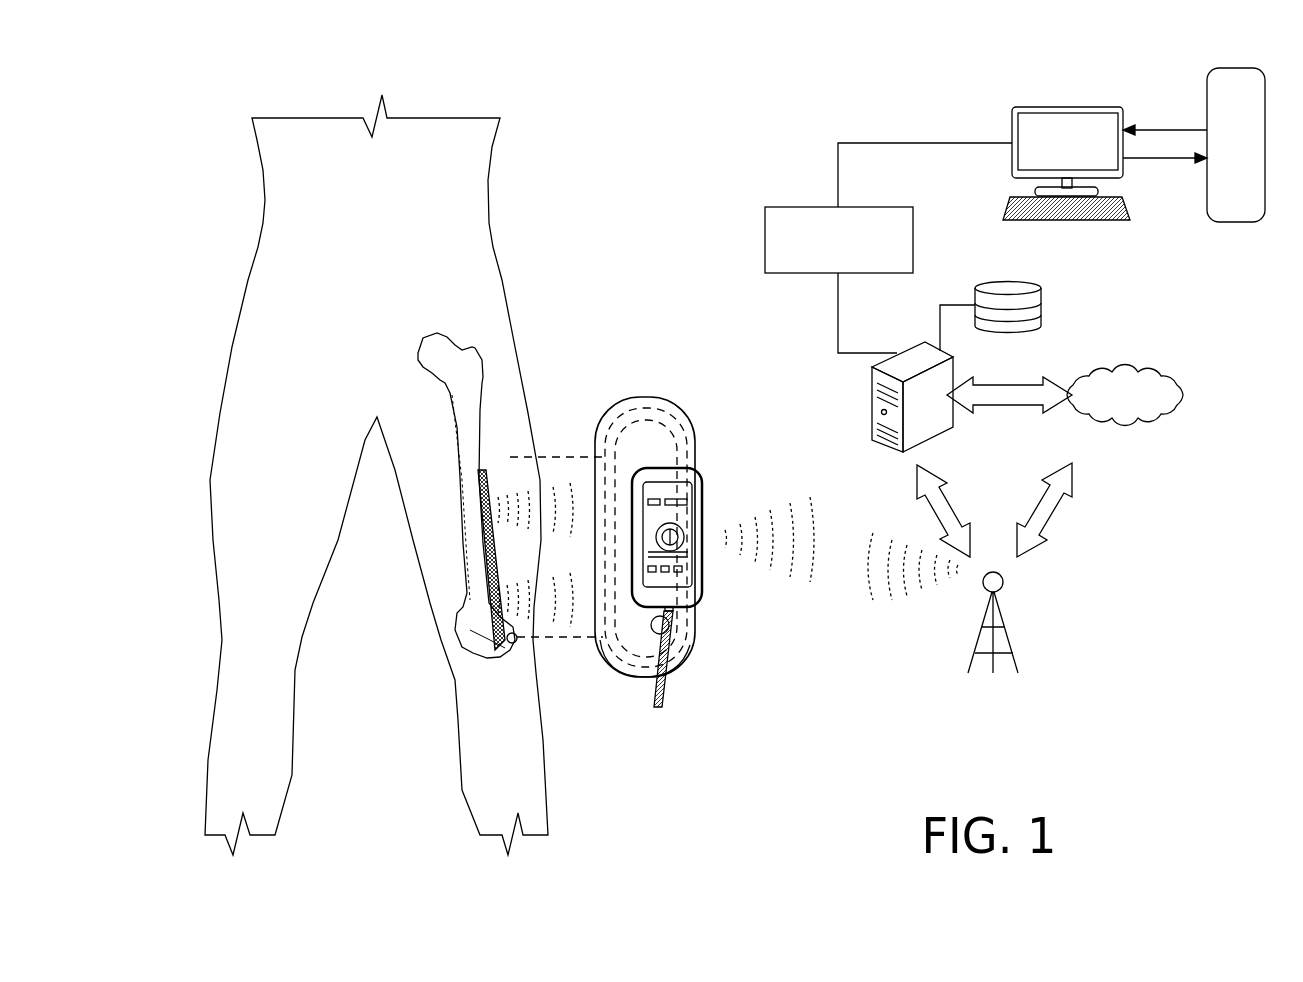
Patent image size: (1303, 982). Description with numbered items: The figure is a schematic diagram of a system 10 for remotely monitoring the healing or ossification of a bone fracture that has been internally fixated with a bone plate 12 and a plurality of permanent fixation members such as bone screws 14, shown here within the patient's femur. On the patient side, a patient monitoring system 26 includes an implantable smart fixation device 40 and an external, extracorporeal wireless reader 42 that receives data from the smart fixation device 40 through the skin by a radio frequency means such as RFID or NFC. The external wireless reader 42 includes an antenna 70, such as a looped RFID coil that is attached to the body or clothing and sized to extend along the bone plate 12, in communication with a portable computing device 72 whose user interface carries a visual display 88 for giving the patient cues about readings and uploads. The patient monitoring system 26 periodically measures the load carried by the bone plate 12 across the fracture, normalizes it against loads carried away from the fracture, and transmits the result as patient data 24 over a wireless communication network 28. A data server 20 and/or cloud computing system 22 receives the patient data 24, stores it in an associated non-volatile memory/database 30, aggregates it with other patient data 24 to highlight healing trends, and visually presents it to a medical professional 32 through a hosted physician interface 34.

The system 10 is at (1056, 645).
The bone plate 12 is at (483, 470).
The bone screws 14 is at (507, 643).
The data server 20 is at (960, 371).
The cloud computing system 22 is at (1187, 383).
The patient data 24 is at (792, 490).
The patient monitoring system 26 is at (655, 377).
The wireless communication network 28 is at (982, 628).
The non-volatile memory/database 30 is at (1044, 298).
The medical professional 32 is at (1222, 158).
The hosted physician interface 34 is at (805, 205).
The implantable smart fixation device 40 is at (476, 512).
The external wireless reader 42 is at (697, 433).
The antenna 70 is at (638, 674).
The portable computing device 72 is at (700, 497).
The visual display 88 is at (668, 687).